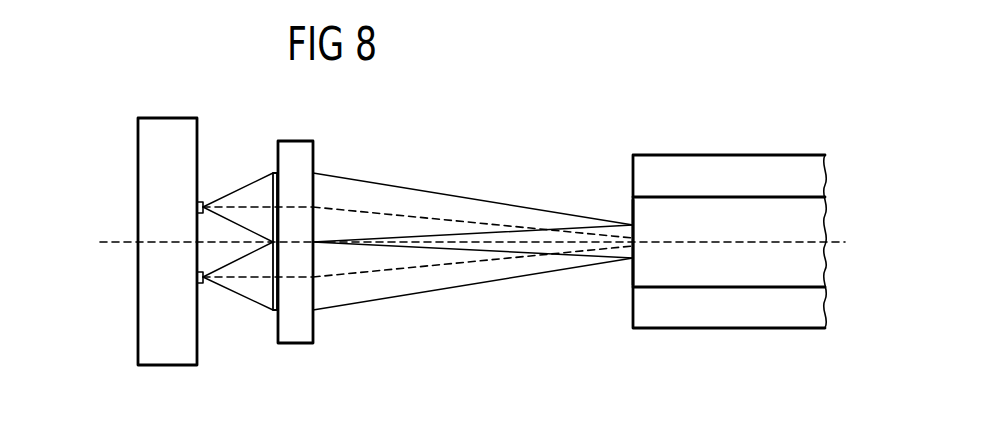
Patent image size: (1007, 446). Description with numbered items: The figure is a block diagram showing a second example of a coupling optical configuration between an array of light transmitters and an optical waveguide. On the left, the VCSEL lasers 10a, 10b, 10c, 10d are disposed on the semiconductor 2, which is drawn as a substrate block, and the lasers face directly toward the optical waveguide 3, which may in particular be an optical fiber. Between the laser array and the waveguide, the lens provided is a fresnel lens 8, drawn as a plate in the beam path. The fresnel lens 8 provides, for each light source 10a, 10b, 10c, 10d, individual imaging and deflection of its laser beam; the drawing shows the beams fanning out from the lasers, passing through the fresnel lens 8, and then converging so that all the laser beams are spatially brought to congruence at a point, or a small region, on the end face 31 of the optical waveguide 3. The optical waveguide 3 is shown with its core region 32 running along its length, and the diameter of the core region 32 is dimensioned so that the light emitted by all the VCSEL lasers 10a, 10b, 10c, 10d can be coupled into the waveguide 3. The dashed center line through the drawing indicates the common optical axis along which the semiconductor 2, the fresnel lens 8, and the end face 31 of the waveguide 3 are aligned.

The semiconductor 2 is at (170, 118).
The optical waveguide 3 is at (714, 235).
The fresnel lens 8 is at (273, 176).
The VCSEL laser 10a is at (175, 207).
The VCSEL laser 10b is at (184, 207).
The VCSEL laser 10c is at (175, 276).
The VCSEL laser 10d is at (184, 278).
The end face 31 is at (631, 213).
The core region 32 is at (815, 263).